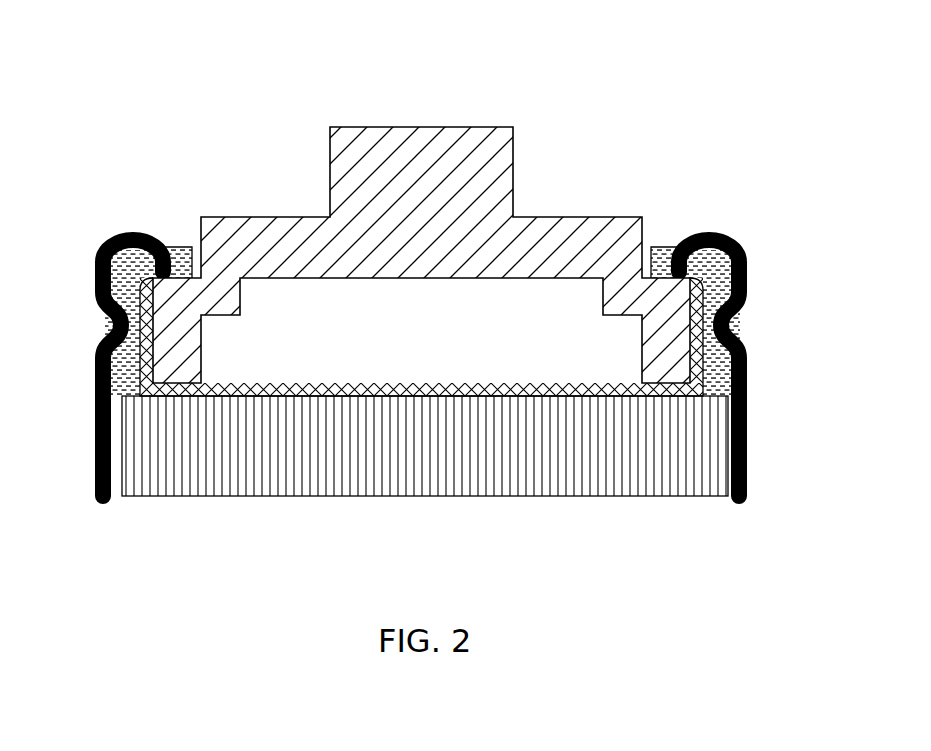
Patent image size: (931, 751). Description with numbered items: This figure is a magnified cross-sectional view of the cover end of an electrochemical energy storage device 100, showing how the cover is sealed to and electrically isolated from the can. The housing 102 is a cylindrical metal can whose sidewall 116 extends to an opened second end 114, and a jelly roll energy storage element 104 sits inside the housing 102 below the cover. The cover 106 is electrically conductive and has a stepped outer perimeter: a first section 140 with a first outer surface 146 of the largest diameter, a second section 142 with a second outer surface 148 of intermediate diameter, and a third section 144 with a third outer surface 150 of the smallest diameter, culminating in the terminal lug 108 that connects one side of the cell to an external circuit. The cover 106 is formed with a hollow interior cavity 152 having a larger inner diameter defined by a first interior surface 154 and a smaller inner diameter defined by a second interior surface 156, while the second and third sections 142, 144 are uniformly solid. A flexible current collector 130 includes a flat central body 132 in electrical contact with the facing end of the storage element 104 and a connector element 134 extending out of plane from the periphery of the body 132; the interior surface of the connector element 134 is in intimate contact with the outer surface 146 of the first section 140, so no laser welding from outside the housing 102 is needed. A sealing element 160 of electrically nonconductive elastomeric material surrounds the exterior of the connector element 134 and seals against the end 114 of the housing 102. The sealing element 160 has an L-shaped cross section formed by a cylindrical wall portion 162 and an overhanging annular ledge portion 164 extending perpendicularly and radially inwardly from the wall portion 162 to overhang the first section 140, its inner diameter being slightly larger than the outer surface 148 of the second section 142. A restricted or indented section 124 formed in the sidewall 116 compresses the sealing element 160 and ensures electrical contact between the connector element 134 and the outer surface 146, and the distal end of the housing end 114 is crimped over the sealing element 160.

The electrochemical energy storage device 100 is at (573, 50).
The housing 102 is at (92, 473).
The energy storage element 104 is at (343, 492).
The cover 106 is at (531, 141).
The terminal lug 108 is at (470, 127).
The second end 114 is at (748, 254).
The sidewall 116 is at (749, 450).
The restricted or indented section 124 is at (734, 323).
The current collector 130 is at (343, 379).
The central body 132 is at (440, 387).
The connector element 134 is at (148, 334).
The first section 140 is at (660, 337).
The second section 142 is at (584, 224).
The third section 144 is at (363, 137).
The first outer surface 146 is at (688, 352).
The second outer surface 148 is at (644, 224).
The third outer surface 150 is at (515, 172).
The interior cavity 152 is at (440, 315).
The first interior surface 154 is at (646, 323).
The second interior surface 156 is at (602, 296).
The sealing element 160 is at (747, 398).
The cylindrical wall portion 162 is at (749, 358).
The annular ledge portion 164 is at (666, 246).